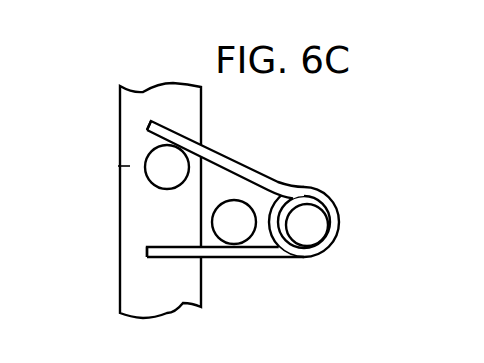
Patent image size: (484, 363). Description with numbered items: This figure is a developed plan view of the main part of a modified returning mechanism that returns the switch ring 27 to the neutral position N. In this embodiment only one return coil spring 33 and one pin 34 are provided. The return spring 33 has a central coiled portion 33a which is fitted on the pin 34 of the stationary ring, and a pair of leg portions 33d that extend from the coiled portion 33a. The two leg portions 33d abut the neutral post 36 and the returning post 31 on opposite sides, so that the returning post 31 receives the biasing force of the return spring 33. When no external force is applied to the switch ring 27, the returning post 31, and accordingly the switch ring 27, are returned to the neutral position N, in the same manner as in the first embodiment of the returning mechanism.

The switch ring 27 is at (143, 211).
The neutral position N is at (56, 218).
The returning post 31 is at (150, 163).
The neutral post 36 is at (245, 215).
The return coil spring 33 is at (281, 217).
The central coiled portion 33a is at (323, 196).
The leg portions 33d is at (188, 134).
The pin 34 is at (318, 228).